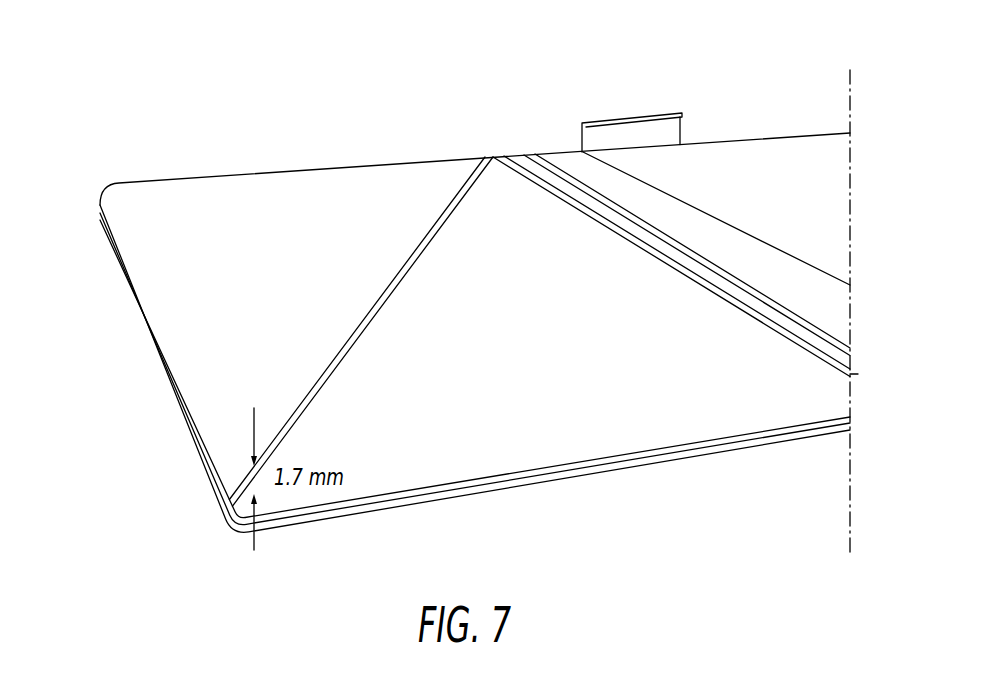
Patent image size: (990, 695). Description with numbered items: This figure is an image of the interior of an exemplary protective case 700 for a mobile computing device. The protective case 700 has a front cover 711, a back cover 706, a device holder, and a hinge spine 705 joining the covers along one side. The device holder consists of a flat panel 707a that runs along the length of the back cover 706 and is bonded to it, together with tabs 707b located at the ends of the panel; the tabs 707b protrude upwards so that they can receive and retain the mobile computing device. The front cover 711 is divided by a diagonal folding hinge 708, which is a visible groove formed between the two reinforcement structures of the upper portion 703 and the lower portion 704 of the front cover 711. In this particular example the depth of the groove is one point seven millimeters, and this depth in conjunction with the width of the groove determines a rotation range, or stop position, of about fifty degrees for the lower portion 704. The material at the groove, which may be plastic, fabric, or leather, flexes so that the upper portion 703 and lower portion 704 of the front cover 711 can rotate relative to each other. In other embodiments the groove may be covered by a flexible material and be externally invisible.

The protective case 700 is at (310, 130).
The upper portion 703 is at (553, 330).
The lower portion 704 is at (364, 223).
The hinge spine 705 is at (852, 349).
The back cover 706 is at (568, 168).
The flat panel 707a is at (763, 167).
The tabs 707b is at (623, 117).
The diagonal folding hinge 708 is at (343, 350).
The front cover 711 is at (267, 215).